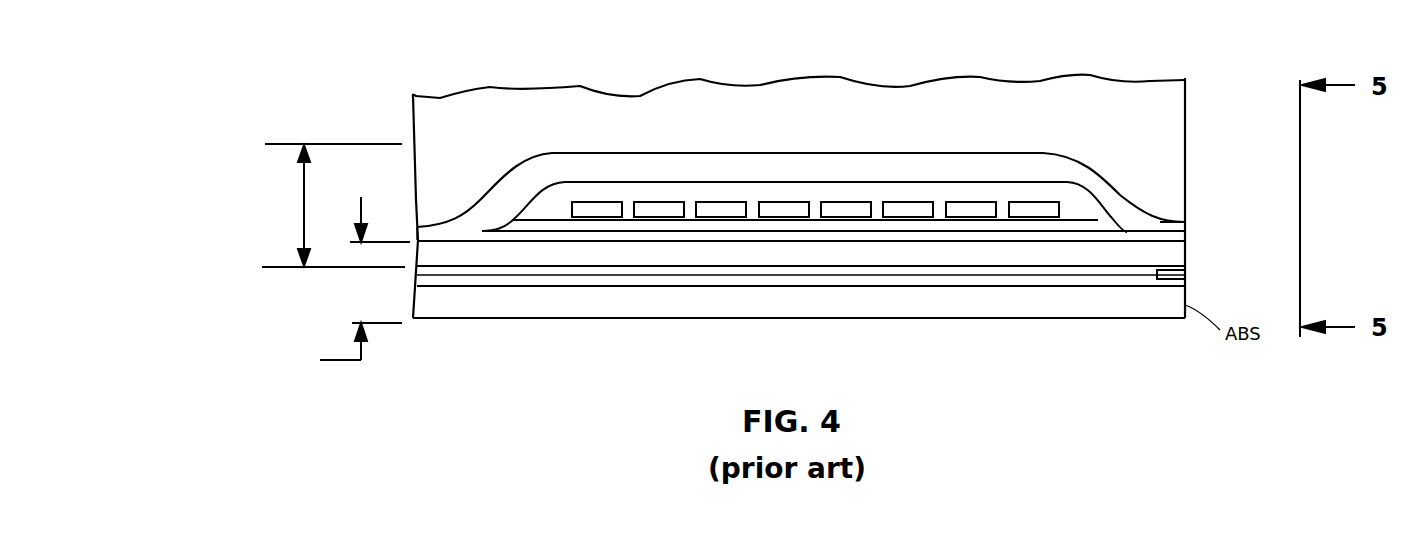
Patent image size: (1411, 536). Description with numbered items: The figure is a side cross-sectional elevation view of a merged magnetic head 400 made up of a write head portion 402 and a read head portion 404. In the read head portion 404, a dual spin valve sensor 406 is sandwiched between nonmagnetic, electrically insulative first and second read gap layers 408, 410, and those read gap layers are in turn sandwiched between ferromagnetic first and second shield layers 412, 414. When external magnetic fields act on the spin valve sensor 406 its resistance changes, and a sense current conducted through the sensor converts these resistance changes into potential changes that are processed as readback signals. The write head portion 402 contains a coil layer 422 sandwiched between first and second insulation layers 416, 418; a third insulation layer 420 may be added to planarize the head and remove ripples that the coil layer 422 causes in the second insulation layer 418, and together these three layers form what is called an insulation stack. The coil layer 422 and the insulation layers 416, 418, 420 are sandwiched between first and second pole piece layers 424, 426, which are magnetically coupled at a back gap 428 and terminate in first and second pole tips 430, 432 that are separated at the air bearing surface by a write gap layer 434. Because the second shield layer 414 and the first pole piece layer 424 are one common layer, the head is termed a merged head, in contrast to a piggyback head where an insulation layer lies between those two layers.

The merged magnetic head 400 is at (382, 108).
The write head portion 402 is at (294, 205).
The read head portion 404 is at (306, 368).
The dual spin valve sensor 406 is at (1185, 275).
The first read gap layer 408 is at (865, 287).
The second read gap layer 410 is at (825, 265).
The first shield layer 412 is at (933, 303).
The second shield layer 414 is at (1033, 255).
The first pole piece layer 424 is at (1033, 255).
The first insulation layer 416 is at (728, 227).
The second insulation layer 418 is at (1070, 207).
The third insulation layer 420 is at (627, 180).
The coil layer 422 is at (844, 210).
The second pole piece layer 426 is at (947, 163).
The back gap 428 is at (455, 240).
The first pole tip 430 is at (1180, 253).
The second pole tip 432 is at (1178, 224).
The write gap layer 434 is at (1185, 235).